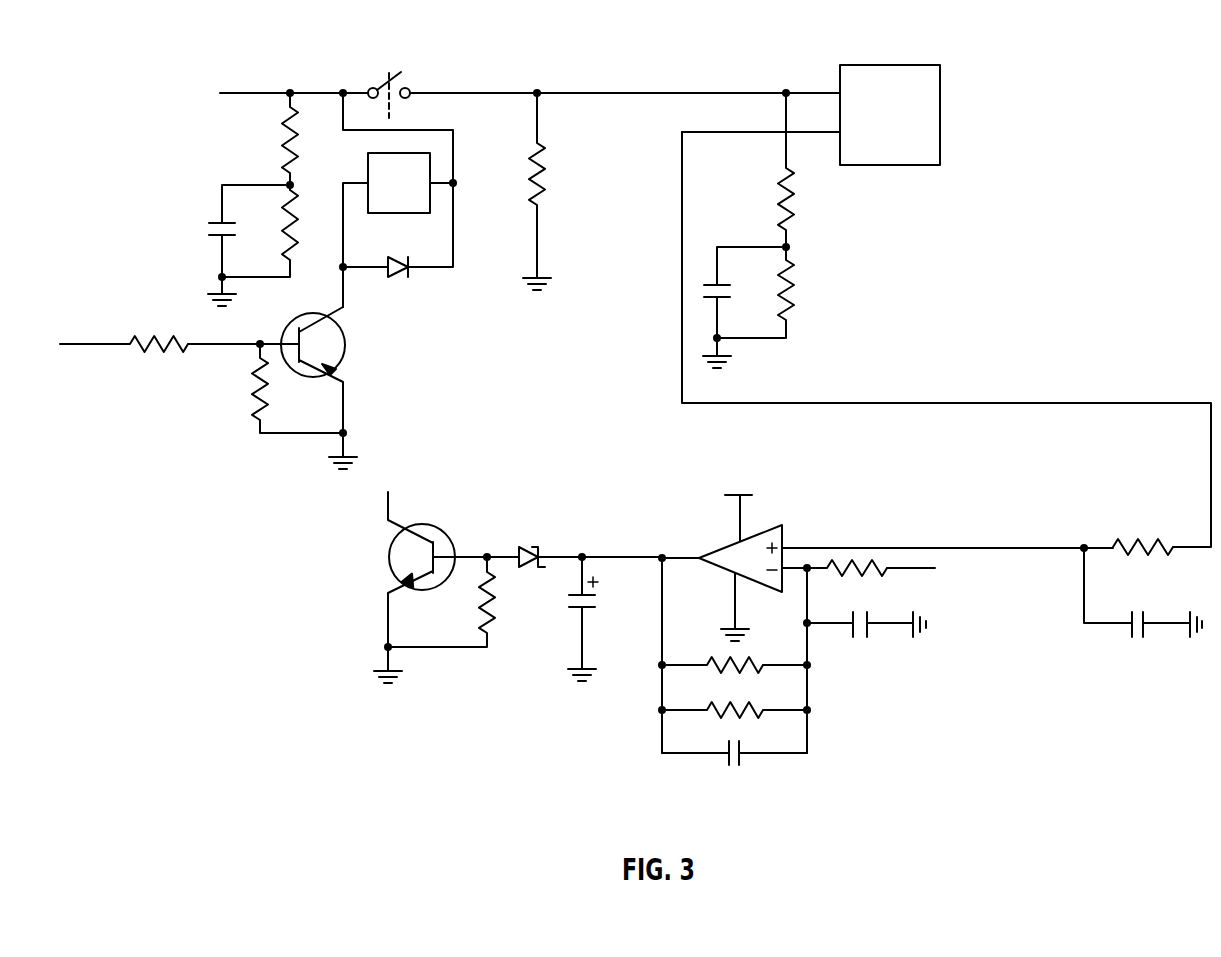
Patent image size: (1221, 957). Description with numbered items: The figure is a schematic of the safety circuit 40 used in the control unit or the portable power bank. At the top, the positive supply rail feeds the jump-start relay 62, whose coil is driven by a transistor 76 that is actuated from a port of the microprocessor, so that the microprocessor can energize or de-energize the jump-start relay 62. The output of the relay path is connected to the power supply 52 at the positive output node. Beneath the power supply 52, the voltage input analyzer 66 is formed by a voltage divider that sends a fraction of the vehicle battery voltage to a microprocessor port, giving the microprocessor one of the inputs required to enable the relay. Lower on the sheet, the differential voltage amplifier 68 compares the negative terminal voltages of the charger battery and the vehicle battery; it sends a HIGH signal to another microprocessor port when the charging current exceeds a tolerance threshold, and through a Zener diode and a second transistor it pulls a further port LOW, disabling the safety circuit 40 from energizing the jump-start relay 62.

The safety circuit 40 is at (635, 400).
The power supply 52 is at (941, 126).
The jump-start relay 62 is at (445, 233).
The voltage input analyzer 66 is at (833, 217).
The differential voltage amplifier 68 is at (533, 545).
The transistor 76 is at (342, 366).